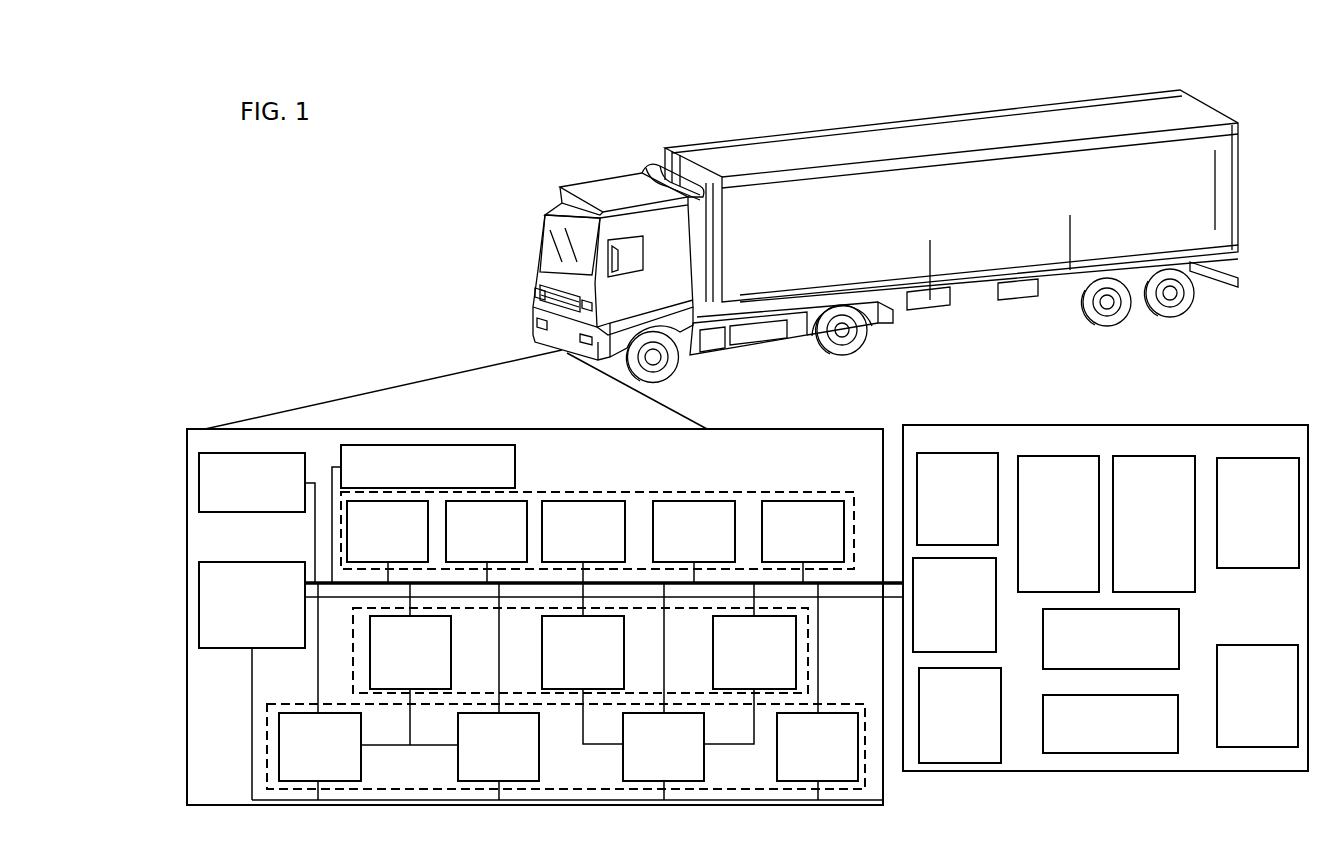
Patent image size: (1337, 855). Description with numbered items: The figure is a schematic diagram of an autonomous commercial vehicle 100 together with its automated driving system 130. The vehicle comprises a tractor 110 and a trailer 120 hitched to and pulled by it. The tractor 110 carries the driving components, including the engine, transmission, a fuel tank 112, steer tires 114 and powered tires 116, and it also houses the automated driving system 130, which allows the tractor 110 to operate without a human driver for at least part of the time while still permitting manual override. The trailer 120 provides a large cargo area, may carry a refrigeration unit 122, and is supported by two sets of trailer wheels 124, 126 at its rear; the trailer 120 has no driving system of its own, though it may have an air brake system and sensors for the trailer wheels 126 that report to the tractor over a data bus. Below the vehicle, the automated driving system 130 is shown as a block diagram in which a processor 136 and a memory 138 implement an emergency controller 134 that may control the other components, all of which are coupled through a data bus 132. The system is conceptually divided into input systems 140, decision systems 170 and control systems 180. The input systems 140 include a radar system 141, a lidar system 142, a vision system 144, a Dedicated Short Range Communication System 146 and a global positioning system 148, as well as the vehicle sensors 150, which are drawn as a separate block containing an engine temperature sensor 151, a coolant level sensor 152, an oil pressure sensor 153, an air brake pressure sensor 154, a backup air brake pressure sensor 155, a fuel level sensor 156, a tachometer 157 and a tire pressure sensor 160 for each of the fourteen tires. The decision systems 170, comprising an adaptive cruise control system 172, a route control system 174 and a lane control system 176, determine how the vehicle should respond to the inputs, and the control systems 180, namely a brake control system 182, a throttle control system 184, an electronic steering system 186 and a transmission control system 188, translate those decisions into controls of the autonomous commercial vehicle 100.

The autonomous commercial vehicle 100 is at (841, 76).
The tractor 110 is at (602, 192).
The fuel tank 112 is at (765, 343).
The steer tires 114 is at (647, 377).
The powered tires 116 is at (843, 355).
The trailer 120 is at (940, 127).
The refrigeration unit 122 is at (671, 164).
The trailer wheels 124 is at (1070, 310).
The trailer wheels 126 is at (1173, 322).
The automated driving system 130 is at (582, 429).
The data bus 132 is at (861, 583).
The emergency controller 134 is at (252, 681).
The processor 136 is at (423, 514).
The memory 138 is at (257, 518).
The input systems 140 is at (650, 492).
The radar system 141 is at (486, 542).
The lidar system 142 is at (694, 542).
The vision system 144 is at (583, 542).
The Dedicated Short Range Communication System (DSRC) 146 is at (387, 542).
The global positioning system (GPS) 148 is at (803, 542).
The vehicle sensors 150 is at (1102, 425).
The engine temperature sensor 151 is at (957, 499).
The coolant level sensor 152 is at (954, 605).
The oil pressure sensor 153 is at (960, 715).
The air brake pressure sensor 154 is at (1058, 524).
The backup air brake pressure sensor 155 is at (1154, 524).
The fuel level sensor 156 is at (1111, 639).
The tachometer 157 is at (1110, 724).
The tire pressure sensor 160 is at (1258, 602).
The decision systems 170 is at (809, 652).
The adaptive cruise control (ACC) system 172 is at (409, 664).
The route control system 174 is at (583, 663).
The lane control system 176 is at (750, 663).
The control systems 180 is at (865, 778).
The brake control system 182 is at (320, 691).
The throttle control system 184 is at (498, 691).
The electronic steering system 186 is at (663, 691).
The transmission control system 188 is at (817, 691).